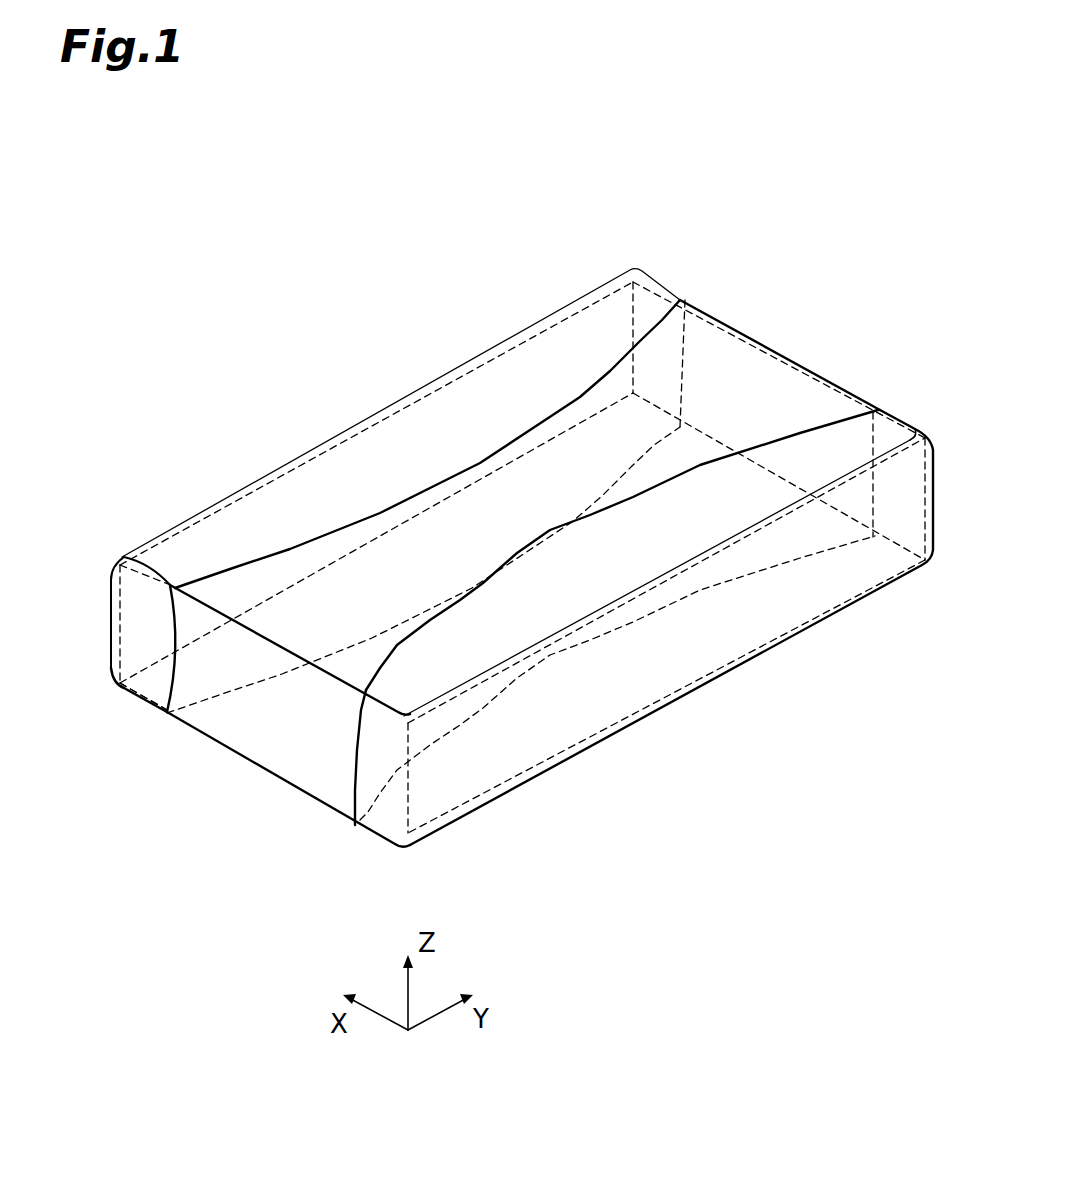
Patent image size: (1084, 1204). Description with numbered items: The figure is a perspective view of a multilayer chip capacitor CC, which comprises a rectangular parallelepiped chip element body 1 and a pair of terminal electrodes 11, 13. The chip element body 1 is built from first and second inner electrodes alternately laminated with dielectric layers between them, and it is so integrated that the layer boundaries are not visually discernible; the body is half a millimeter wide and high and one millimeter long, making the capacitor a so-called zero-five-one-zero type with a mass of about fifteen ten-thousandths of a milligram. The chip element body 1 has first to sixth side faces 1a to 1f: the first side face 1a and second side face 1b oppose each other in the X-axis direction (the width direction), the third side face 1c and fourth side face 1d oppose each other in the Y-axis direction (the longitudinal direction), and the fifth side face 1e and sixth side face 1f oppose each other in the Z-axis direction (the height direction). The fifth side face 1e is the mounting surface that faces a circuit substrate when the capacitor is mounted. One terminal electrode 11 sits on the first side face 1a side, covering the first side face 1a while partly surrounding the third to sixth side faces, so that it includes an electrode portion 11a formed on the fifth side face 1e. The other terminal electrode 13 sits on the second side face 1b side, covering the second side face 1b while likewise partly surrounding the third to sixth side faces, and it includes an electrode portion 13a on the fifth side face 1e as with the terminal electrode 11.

The multilayer chip capacitor CC is at (226, 318).
The chip element body 1 is at (275, 777).
The first side face 1a is at (667, 652).
The second side face 1b is at (262, 522).
The third side face 1c is at (255, 707).
The fourth side face 1d is at (775, 392).
The fifth side face 1e is at (718, 357).
The sixth side face 1f is at (338, 760).
The terminal electrode 11 is at (827, 620).
The electrode portion 11a is at (528, 606).
The terminal electrode 13 is at (395, 400).
The electrode portion 13a is at (512, 383).